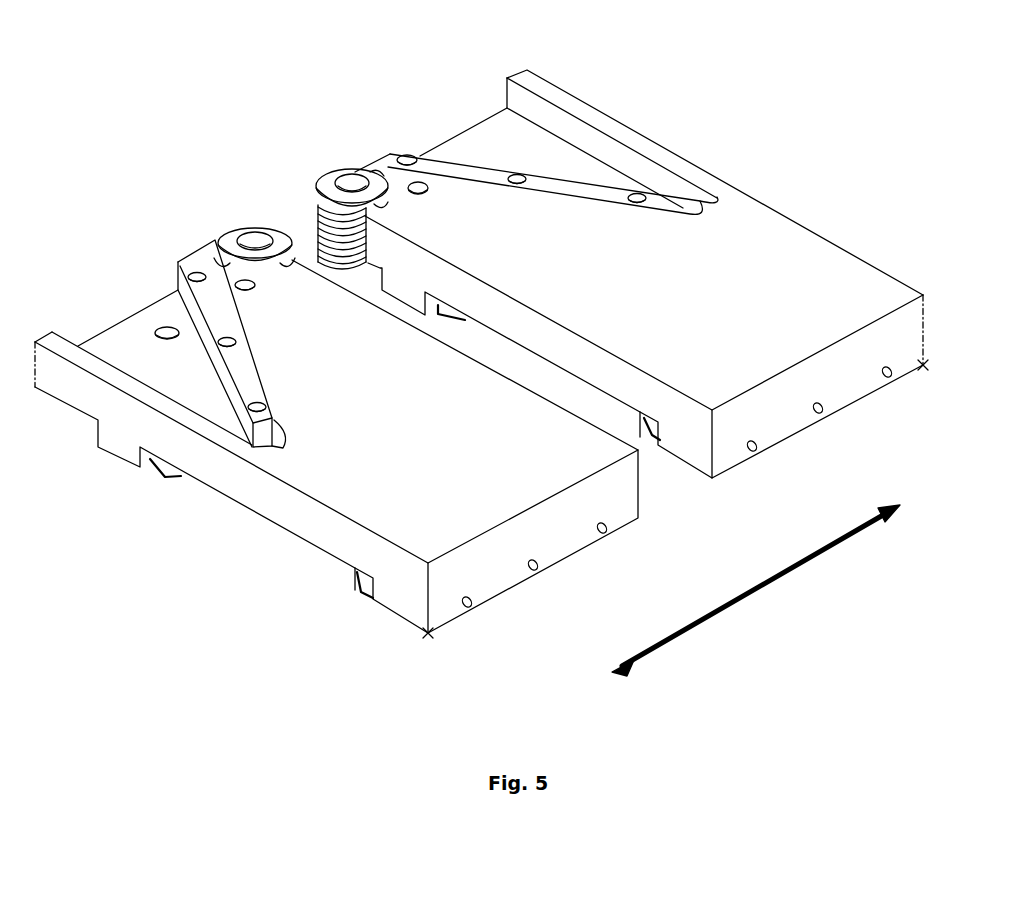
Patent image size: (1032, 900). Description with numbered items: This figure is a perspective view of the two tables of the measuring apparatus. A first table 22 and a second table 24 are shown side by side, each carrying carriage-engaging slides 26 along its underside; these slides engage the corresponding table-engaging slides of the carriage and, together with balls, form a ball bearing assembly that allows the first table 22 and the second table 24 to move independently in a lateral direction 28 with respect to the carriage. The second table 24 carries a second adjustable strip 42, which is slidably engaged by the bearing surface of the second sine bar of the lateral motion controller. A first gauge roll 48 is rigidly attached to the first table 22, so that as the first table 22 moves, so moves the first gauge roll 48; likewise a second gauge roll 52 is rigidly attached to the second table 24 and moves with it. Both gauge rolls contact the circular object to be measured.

The first table 22 is at (379, 456).
The second table 24 is at (722, 257).
The carriage-engaging slides 26 is at (358, 590).
The lateral direction 28 is at (767, 587).
The second adjustable strip 42 is at (552, 170).
The first gauge roll 48 is at (228, 232).
The second gauge roll 52 is at (362, 175).